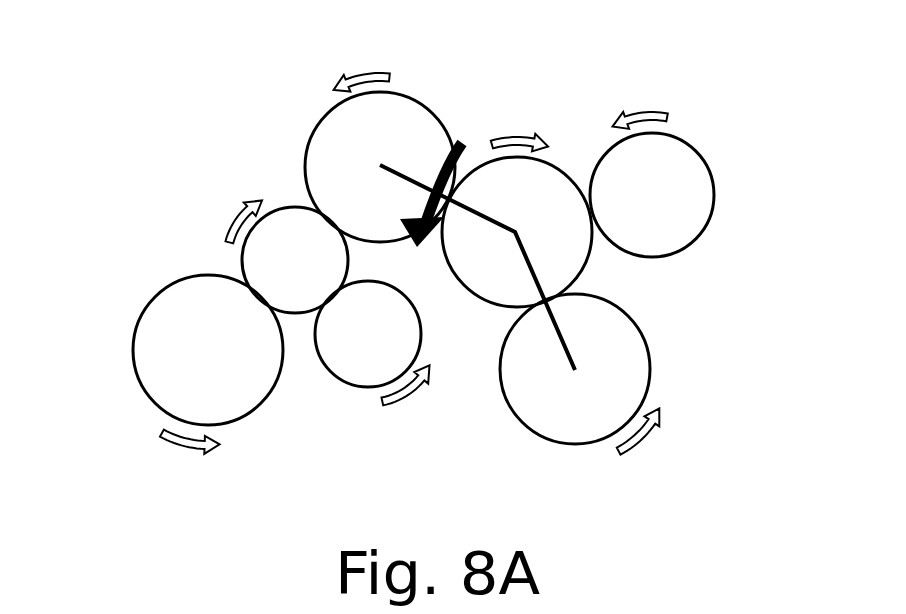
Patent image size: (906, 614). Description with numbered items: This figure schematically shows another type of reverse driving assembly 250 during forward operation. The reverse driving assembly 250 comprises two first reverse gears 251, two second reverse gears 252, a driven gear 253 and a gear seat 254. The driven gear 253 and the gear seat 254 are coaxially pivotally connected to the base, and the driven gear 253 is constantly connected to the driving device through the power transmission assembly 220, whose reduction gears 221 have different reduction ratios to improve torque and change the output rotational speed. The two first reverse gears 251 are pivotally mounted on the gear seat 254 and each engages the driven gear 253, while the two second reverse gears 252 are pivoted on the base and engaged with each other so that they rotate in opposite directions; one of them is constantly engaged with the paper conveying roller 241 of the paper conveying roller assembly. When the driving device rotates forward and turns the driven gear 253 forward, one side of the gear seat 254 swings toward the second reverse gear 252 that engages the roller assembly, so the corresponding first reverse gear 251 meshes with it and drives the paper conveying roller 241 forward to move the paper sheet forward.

The power transmission assembly 220 is at (686, 153).
The reduction gear 221 is at (667, 227).
The paper conveying roller 241 is at (202, 362).
The reverse driving assembly 250 is at (476, 303).
The first reverse gear 251 is at (347, 167).
The second reverse gear 252 is at (283, 237).
The driven gear 253 is at (543, 198).
The gear seat 254 is at (535, 274).